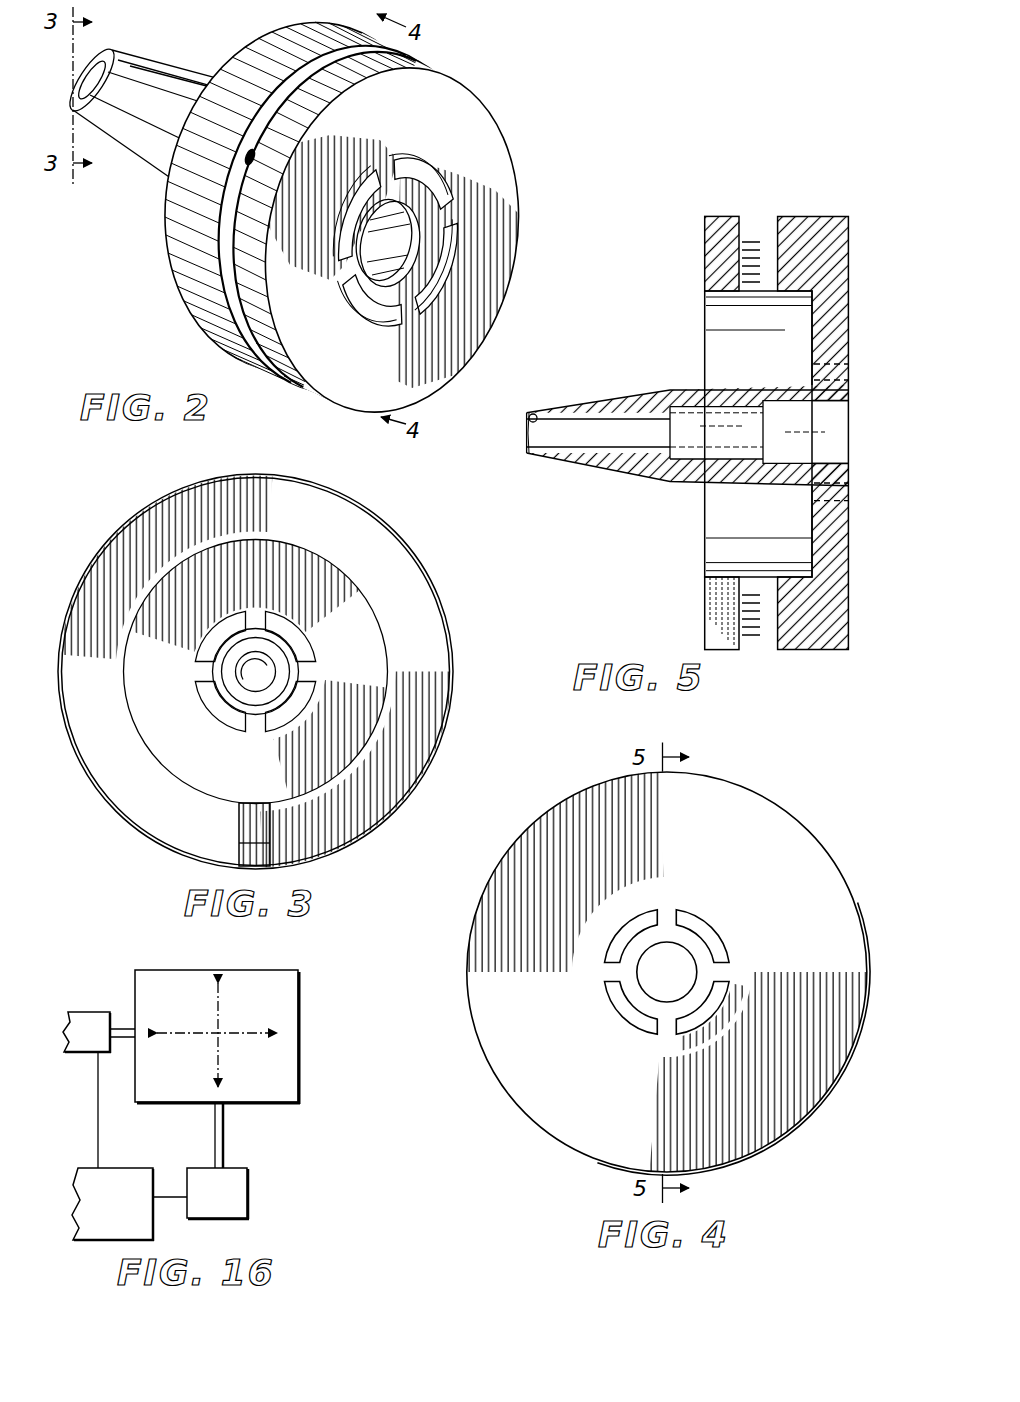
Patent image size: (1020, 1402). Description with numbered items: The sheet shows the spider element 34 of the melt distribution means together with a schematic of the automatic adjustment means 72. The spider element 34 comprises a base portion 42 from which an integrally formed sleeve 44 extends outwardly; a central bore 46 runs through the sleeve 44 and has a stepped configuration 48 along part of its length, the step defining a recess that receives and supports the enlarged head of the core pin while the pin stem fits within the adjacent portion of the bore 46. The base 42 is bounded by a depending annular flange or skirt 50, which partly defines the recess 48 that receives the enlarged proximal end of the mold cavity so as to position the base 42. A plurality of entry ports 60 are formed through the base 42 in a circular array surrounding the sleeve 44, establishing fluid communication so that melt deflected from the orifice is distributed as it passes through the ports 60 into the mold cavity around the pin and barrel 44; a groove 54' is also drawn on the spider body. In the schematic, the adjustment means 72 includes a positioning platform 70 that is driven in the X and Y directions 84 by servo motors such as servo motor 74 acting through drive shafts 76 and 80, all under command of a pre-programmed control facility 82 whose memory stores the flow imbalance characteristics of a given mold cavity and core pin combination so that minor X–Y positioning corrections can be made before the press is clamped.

In FIG. 2, the spider element 34 is at (518, 155).
In FIG. 5, the spider element 34 is at (831, 216).
In FIG. 3, the spider element 34 is at (405, 547).
In FIG. 4, the spider element 34 is at (668, 973).
In FIG. 2, the base portion 42 is at (430, 368).
In FIG. 2, the sleeve 44 is at (203, 72).
In FIG. 5, the sleeve 44 is at (656, 391).
In FIG. 3, the sleeve 44 is at (299, 669).
In FIG. 2, the central bore 46 is at (91, 79).
In FIG. 5, the central bore 46 is at (530, 418).
In FIG. 3, the central bore 46 is at (275, 680).
In FIG. 5, the stepped configuration 48 is at (706, 318).
In FIG. 3, the stepped configuration 48 is at (342, 772).
In FIG. 2, the annular flange 50 is at (268, 380).
In FIG. 5, the annular flange 50 is at (792, 650).
In FIG. 3, the annular flange 50 is at (442, 615).
In FIG. 2, the groove 54' is at (360, 224).
In FIG. 5, the groove 54' is at (752, 464).
In FIG. 2, the entry ports 60 is at (410, 166).
In FIG. 5, the entry ports 60 is at (842, 372).
In FIG. 3, the entry ports 60 is at (214, 632).
In FIG. 4, the entry ports 60 is at (627, 931).
In FIG. 16, the positioning platform 70 is at (298, 1060).
In FIG. 16, the automatic adjustment means 72 is at (313, 994).
In FIG. 16, the servo motor 74 is at (248, 1200).
In FIG. 16, the drive shaft 76 is at (224, 1140).
In FIG. 16, the drive shaft 80 is at (86, 1012).
In FIG. 16, the control facility 82 is at (153, 1228).
In FIG. 16, the X and Y direction 84 is at (205, 1020).